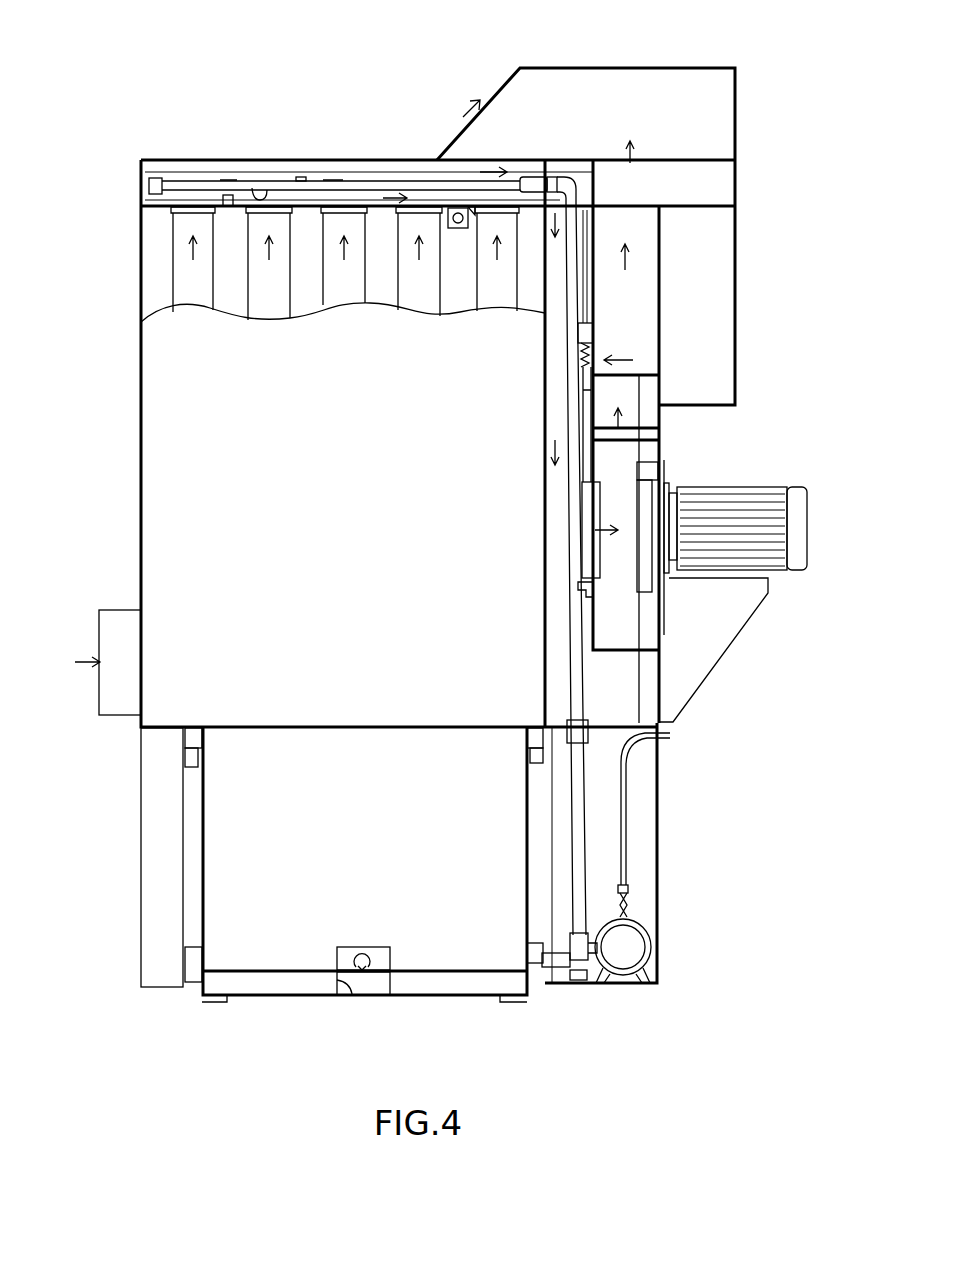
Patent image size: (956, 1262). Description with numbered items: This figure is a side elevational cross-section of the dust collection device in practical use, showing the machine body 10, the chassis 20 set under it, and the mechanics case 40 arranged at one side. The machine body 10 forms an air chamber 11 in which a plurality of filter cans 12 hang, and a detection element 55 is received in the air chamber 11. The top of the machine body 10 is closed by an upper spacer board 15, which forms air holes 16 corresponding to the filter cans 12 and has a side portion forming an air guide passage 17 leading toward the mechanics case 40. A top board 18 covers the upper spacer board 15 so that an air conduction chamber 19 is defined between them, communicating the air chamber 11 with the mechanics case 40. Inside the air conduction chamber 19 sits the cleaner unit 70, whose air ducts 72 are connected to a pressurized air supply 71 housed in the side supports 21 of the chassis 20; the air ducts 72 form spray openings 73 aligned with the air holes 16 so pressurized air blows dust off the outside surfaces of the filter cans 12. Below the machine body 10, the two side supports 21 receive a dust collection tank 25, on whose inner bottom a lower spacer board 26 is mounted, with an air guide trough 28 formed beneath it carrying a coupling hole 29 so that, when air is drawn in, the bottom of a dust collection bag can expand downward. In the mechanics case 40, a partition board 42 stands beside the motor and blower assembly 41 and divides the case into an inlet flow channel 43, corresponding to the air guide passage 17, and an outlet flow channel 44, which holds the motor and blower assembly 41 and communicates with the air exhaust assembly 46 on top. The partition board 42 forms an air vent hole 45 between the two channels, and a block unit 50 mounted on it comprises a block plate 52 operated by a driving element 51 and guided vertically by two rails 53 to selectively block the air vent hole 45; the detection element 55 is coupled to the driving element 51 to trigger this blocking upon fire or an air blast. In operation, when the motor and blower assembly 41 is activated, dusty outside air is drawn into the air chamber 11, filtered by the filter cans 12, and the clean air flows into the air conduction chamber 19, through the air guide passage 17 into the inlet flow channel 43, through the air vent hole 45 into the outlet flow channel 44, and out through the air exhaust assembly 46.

The machine body 10 is at (150, 372).
The air chamber 11 is at (216, 281).
The filter cans 12 is at (180, 275).
The upper spacer board 15 is at (157, 208).
The air holes 16 is at (175, 192).
The air guide passage 17 is at (577, 193).
The top board 18 is at (330, 160).
The air conduction chamber 19 is at (378, 180).
The chassis 20 is at (127, 836).
The side supports 21 is at (660, 808).
The dust collection tank 25 is at (203, 927).
The lower spacer board 26 is at (268, 971).
The air guide trough 28 is at (353, 995).
The coupling hole 29 is at (365, 970).
The mechanics case 40 is at (737, 380).
The motor and blower assembly 41 is at (748, 497).
The partition board 42 is at (597, 225).
The inlet flow channel 43 is at (545, 509).
The outlet flow channel 44 is at (618, 304).
The air vent hole 45 is at (643, 492).
The air exhaust assembly 46 is at (622, 68).
The block unit 50 is at (633, 360).
The driving element 51 is at (590, 335).
The block plate 52 is at (583, 395).
The rails 53 is at (582, 525).
The detection element 55 is at (455, 207).
The cleaner unit 70 is at (658, 911).
The pressurized air supply 71 is at (645, 955).
The air ducts 72 is at (300, 178).
The spray openings 73 is at (252, 190).